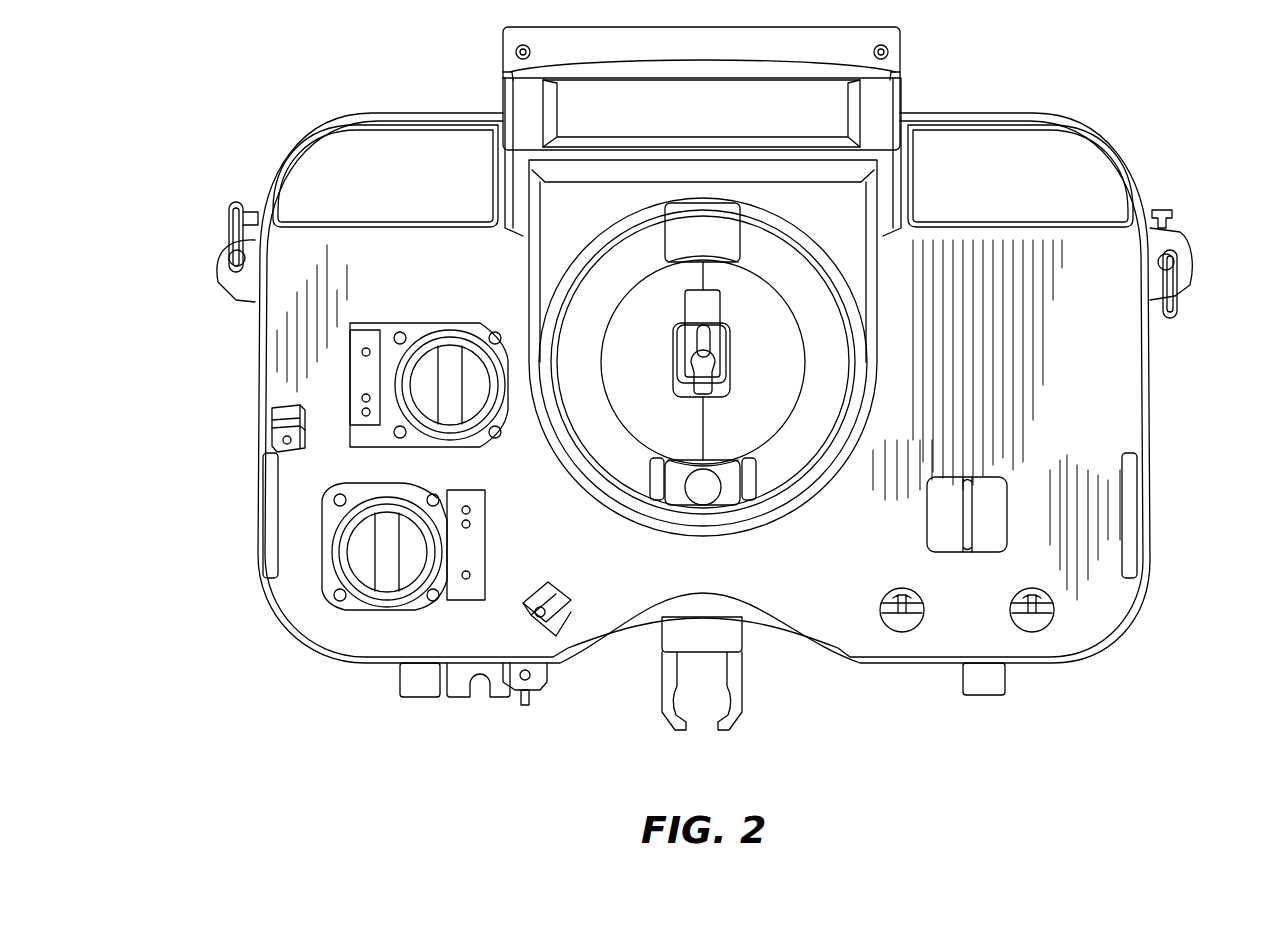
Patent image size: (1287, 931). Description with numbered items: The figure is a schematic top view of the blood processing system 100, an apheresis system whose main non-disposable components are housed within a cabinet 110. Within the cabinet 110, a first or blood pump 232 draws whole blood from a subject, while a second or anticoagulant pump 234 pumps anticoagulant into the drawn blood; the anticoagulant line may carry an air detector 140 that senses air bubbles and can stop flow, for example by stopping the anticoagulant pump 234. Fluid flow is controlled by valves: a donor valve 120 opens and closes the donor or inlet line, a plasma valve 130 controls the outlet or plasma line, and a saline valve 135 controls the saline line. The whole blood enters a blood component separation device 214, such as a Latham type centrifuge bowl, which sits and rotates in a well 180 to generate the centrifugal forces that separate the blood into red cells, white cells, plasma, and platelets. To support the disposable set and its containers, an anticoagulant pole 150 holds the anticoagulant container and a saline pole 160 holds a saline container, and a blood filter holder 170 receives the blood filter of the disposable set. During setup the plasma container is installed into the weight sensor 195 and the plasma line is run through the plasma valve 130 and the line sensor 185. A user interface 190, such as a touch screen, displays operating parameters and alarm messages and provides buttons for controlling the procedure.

The blood processing system 100 is at (1100, 66).
The cabinet 110 is at (1150, 413).
The donor valve 120 is at (540, 695).
The plasma valve 130 is at (900, 632).
The saline valve 135 is at (1033, 632).
The air detector 140 is at (278, 418).
The anticoagulant pole 150 is at (230, 214).
The saline pole 160 is at (1176, 311).
The blood filter holder 170 is at (462, 698).
The well 180 is at (565, 273).
The line sensor 185 is at (992, 523).
The user interface 190 is at (708, 124).
The weight sensor 195 is at (735, 726).
The blood component separation device 214 is at (763, 335).
The blood pump 232 is at (327, 572).
The anticoagulant pump 234 is at (393, 375).